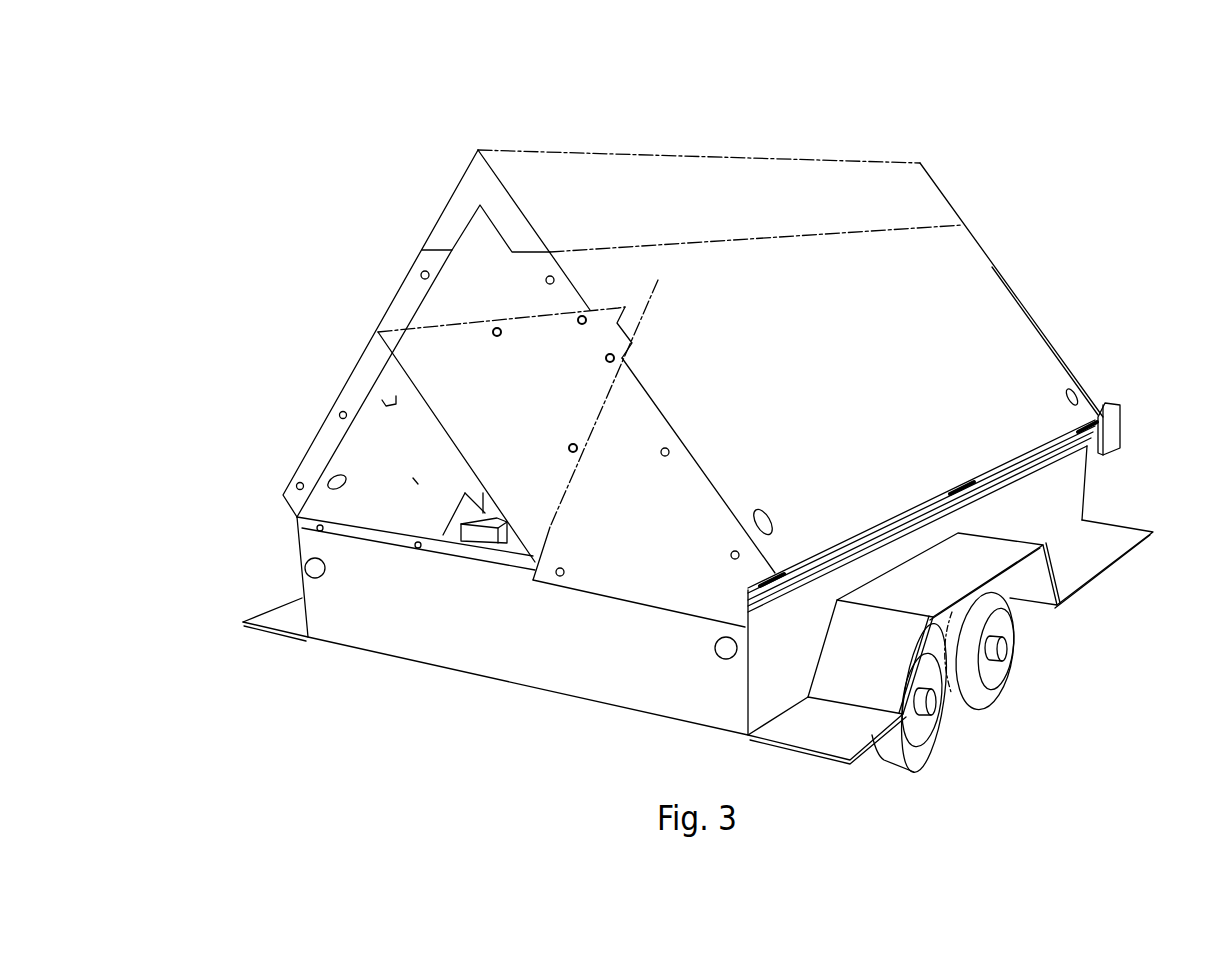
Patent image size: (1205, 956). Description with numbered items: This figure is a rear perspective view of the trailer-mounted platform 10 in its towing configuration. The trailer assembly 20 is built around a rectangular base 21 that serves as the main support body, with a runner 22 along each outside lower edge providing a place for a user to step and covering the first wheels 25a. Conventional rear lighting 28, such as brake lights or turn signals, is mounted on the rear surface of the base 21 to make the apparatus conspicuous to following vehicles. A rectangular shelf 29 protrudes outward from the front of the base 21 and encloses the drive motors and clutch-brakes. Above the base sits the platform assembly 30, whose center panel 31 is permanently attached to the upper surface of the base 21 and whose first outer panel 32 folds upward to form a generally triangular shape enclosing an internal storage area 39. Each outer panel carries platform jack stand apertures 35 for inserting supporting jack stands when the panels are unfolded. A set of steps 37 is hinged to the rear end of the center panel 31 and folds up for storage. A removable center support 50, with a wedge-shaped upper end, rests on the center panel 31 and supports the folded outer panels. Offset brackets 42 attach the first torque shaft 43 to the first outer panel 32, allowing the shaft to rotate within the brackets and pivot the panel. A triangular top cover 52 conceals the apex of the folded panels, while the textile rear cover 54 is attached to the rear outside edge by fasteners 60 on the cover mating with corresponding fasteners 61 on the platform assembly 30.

The trailer-mounted platform 10 is at (262, 128).
The trailer assembly 20 is at (790, 762).
The base 21 is at (510, 652).
The runner 22 is at (245, 622).
The first wheel 25a is at (985, 700).
The rear lighting 28 is at (312, 568).
The shelf 29 is at (1110, 435).
The platform assembly 30 is at (430, 162).
The center panel 31 is at (397, 542).
The first outer panel 32 is at (990, 297).
The platform jack stand aperture 35 is at (1068, 393).
The steps 37 is at (382, 400).
The storage area 39 is at (413, 478).
The offset bracket 42 is at (770, 583).
The first torque shaft 43 is at (932, 512).
The center support 50 is at (500, 532).
The top cover 52 is at (705, 173).
The rear cover 54 is at (590, 385).
The first fastener 60 is at (500, 327).
The second fastener 61 is at (297, 515).